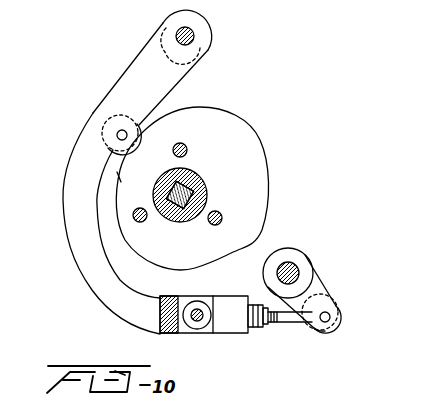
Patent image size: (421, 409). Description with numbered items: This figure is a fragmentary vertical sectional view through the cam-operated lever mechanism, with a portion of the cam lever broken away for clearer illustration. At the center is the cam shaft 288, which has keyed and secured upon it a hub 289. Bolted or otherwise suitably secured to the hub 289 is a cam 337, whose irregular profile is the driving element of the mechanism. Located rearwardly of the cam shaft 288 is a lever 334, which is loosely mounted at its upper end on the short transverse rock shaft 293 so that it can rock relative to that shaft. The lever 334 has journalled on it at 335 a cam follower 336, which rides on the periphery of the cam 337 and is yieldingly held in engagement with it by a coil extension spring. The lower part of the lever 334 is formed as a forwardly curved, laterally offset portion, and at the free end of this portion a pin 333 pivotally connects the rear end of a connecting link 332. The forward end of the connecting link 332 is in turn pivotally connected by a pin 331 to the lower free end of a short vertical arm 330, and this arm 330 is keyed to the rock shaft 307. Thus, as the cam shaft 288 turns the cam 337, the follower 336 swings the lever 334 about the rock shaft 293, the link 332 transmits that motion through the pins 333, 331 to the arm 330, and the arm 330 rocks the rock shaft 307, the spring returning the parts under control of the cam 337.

The cam shaft 288 is at (187, 180).
The hub 289 is at (205, 200).
The rock shaft 293 is at (194, 37).
The rock shaft 307 is at (291, 262).
The vertical arm 330 is at (305, 292).
The pin 331 is at (329, 316).
The connecting link 332 is at (290, 319).
The pin 333 is at (197, 309).
The lever 334 is at (82, 157).
The journal 335 is at (116, 124).
The cam follower 336 is at (136, 184).
The cam 337 is at (235, 127).